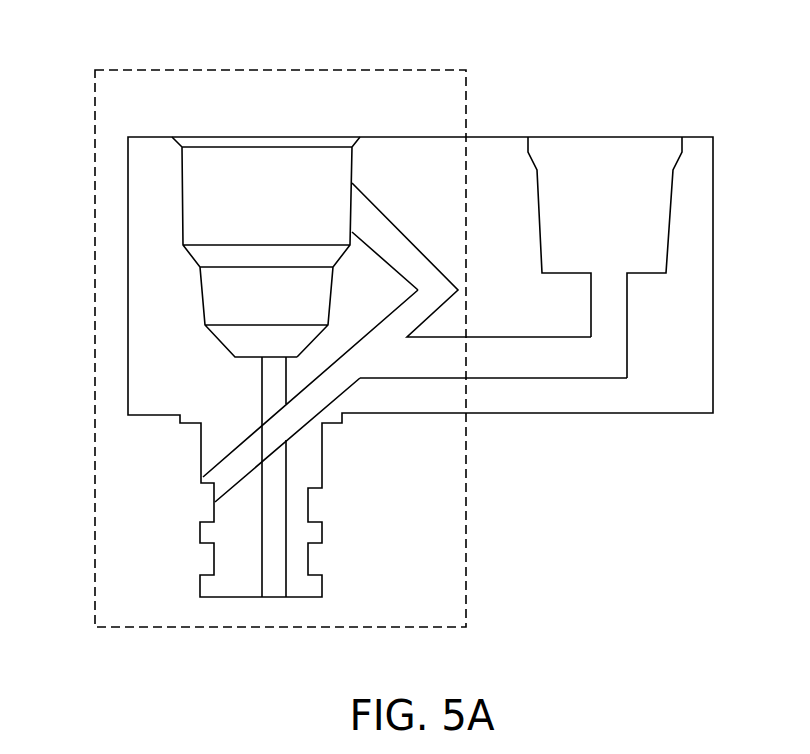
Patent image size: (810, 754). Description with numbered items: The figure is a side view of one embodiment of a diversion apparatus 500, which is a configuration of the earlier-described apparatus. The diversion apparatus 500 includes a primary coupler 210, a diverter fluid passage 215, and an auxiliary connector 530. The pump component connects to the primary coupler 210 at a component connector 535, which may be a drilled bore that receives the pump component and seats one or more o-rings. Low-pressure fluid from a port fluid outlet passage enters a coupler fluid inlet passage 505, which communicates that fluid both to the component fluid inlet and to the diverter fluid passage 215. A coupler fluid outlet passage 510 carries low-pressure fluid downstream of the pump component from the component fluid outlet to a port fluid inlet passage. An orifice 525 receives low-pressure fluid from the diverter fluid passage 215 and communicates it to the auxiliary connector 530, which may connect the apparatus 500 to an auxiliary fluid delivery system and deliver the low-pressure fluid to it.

The diversion apparatus 500 is at (98, 68).
The primary coupler 210 is at (94, 530).
The component connector 535 is at (237, 137).
The auxiliary connector 530 is at (588, 136).
The diverter fluid passage 215 is at (506, 350).
The orifice 525 is at (613, 318).
The coupler fluid inlet passage 505 is at (257, 432).
The coupler fluid outlet passage 510 is at (259, 554).